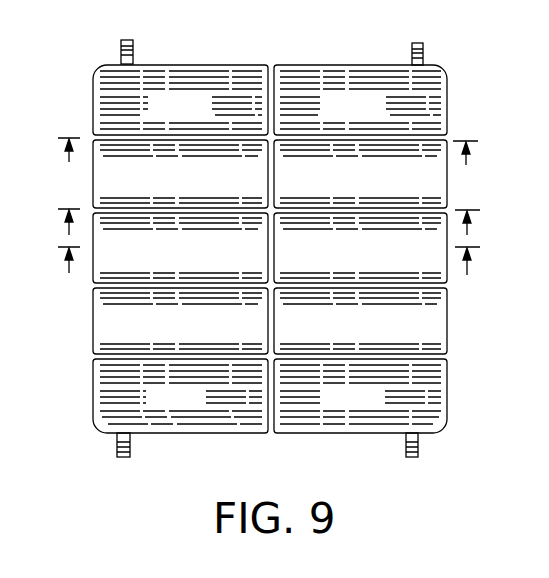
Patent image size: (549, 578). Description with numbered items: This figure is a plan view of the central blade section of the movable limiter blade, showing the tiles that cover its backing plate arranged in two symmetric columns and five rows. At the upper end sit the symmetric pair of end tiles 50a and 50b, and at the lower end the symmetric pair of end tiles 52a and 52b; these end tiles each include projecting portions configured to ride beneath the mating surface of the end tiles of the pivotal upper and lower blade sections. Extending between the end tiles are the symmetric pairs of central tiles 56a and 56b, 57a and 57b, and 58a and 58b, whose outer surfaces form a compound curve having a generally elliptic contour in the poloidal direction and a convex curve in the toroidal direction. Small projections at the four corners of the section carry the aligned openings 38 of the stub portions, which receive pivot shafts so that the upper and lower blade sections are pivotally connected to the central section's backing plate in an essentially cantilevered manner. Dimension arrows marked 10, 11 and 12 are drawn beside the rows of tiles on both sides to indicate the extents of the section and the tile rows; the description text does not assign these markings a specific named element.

The battery assembly 10 is at (265, 156).
The battery module 11 is at (267, 227).
The battery module 12 is at (267, 267).
The aligned openings 38 is at (135, 58).
The end tile 50a is at (205, 120).
The end tile 50b is at (378, 120).
The end tile 52a is at (201, 411).
The end tile 52b is at (380, 409).
The central tile 56a is at (205, 198).
The central tile 56b is at (380, 198).
The central tile 57a is at (205, 266).
The central tile 57b is at (380, 266).
The central tile 58a is at (201, 327).
The central tile 58b is at (380, 327).